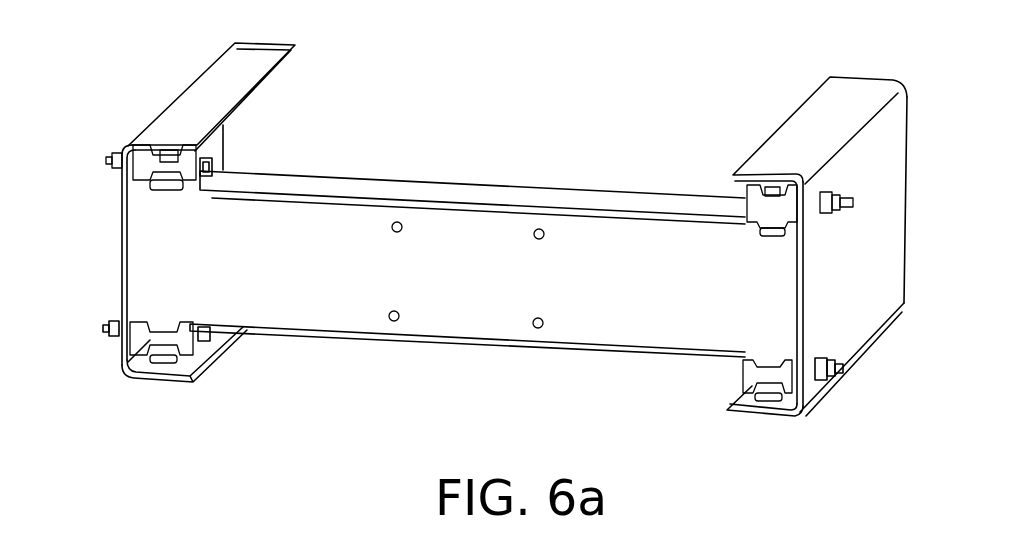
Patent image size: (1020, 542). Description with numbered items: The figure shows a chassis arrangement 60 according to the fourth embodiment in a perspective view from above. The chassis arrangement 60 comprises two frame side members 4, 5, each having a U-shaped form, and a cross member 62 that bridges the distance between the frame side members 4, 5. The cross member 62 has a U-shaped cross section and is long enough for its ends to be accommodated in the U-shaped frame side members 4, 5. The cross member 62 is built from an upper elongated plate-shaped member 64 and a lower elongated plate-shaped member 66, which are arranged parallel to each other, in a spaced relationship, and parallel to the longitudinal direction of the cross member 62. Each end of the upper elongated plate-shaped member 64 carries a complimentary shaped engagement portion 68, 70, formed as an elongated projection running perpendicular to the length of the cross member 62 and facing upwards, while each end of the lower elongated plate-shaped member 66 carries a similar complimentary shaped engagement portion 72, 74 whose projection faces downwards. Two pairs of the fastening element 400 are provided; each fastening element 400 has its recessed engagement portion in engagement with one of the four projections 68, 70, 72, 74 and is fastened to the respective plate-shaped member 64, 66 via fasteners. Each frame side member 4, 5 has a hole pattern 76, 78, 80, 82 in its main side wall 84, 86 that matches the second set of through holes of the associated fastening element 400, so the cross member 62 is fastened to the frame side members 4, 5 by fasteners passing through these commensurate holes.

The frame side member 4 is at (200, 115).
The frame side member 5 is at (803, 135).
The chassis arrangement 60 is at (467, 227).
The cross member 62 is at (345, 252).
The upper elongated plate-shaped member 64 is at (499, 198).
The lower elongated plate-shaped member 66 is at (452, 352).
The complimentary shaped engagement portion 68 is at (767, 222).
The complimentary shaped engagement portion 70 is at (163, 192).
The complimentary shaped engagement portion 72 is at (165, 335).
The complimentary shaped engagement portion 74 is at (772, 350).
The hole pattern 76 is at (855, 200).
The hole pattern 78 is at (112, 146).
The hole pattern 80 is at (113, 343).
The hole pattern 82 is at (825, 395).
The main side wall 84 is at (870, 237).
The main side wall 86 is at (118, 195).
The fastening element 400 is at (168, 200).